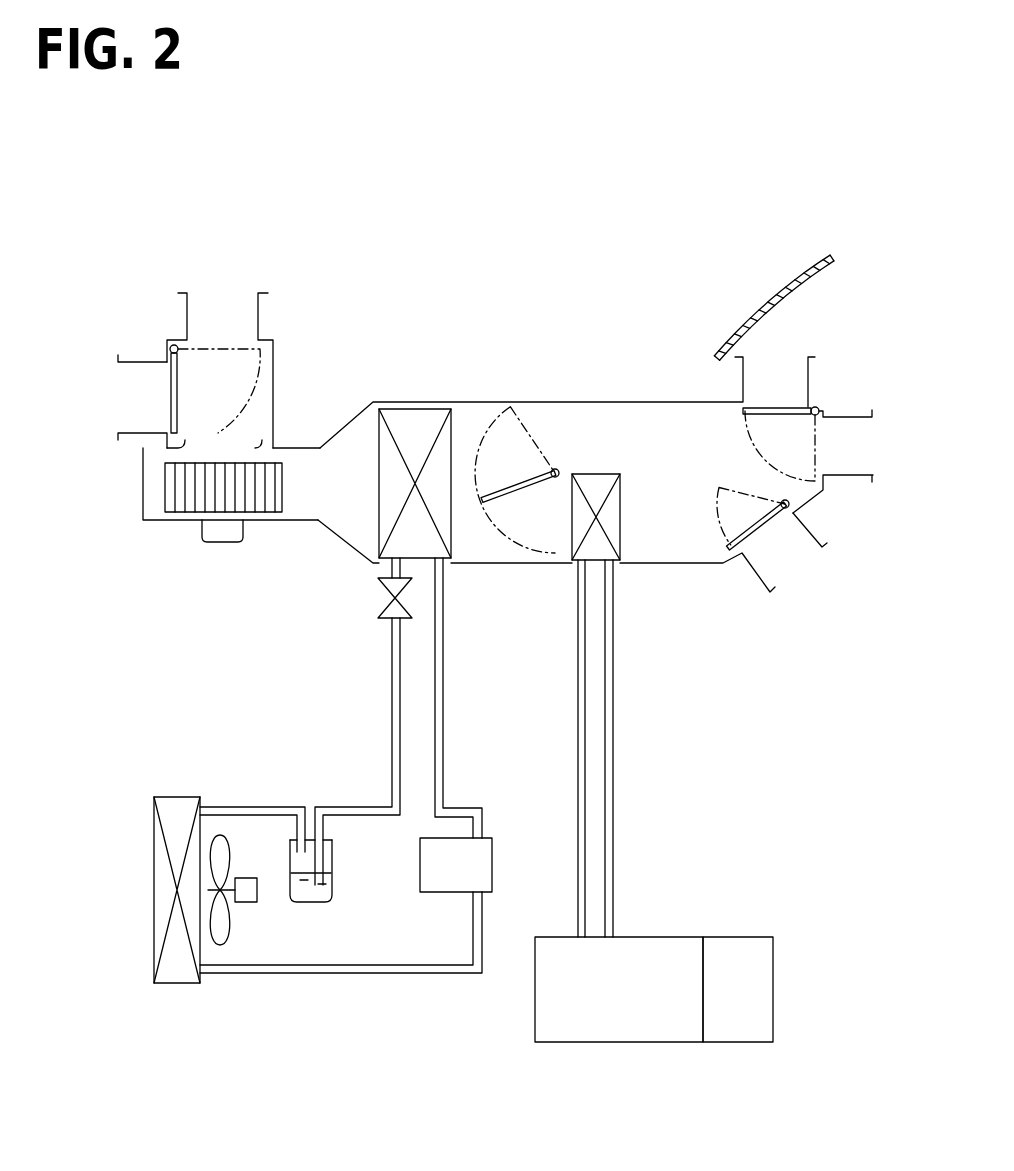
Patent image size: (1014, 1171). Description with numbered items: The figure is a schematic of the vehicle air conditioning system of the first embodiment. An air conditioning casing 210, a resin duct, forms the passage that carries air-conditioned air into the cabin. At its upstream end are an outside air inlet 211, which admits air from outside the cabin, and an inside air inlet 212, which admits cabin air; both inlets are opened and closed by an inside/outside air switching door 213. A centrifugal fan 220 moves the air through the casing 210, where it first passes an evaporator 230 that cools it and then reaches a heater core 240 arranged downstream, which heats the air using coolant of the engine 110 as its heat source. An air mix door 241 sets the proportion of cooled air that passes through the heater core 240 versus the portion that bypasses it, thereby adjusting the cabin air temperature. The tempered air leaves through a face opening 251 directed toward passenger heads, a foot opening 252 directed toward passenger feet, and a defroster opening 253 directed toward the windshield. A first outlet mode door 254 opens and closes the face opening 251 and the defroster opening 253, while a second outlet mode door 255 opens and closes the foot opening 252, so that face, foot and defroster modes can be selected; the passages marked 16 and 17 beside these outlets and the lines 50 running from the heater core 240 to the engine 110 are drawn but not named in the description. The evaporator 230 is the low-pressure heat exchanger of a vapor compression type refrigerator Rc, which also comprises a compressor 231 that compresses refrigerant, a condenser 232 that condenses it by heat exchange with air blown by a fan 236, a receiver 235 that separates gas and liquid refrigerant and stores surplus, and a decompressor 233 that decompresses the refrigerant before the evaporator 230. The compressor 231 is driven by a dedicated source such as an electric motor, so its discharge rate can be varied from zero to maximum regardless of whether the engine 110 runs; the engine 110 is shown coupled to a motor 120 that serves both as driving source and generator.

The air conditioning casing 210 is at (548, 402).
The outside air inlet 211 is at (221, 302).
The inside air inlet 212 is at (130, 388).
The inside/outside air switching door 213 is at (163, 412).
The fan 220 is at (220, 545).
The evaporator 230 is at (407, 409).
The decompressor 233 is at (378, 592).
The air mix door 241 is at (518, 490).
The heater core 240 is at (620, 523).
The defroster opening 253 is at (773, 398).
The first outlet mode door 254 is at (787, 407).
The face opening 251 is at (820, 445).
The face duct 16 is at (852, 478).
The foot duct 17 is at (818, 540).
The foot opening 252 is at (775, 518).
The second outlet mode door 255 is at (750, 562).
The vapor compression type refrigerator Rc is at (248, 787).
The receiver 235 is at (312, 903).
The compressor 231 is at (447, 893).
The condenser 232 is at (173, 985).
The fan 236 is at (222, 945).
The hot water pipes 50 is at (626, 801).
The engine 110 is at (620, 1043).
The motor 120 is at (742, 1043).